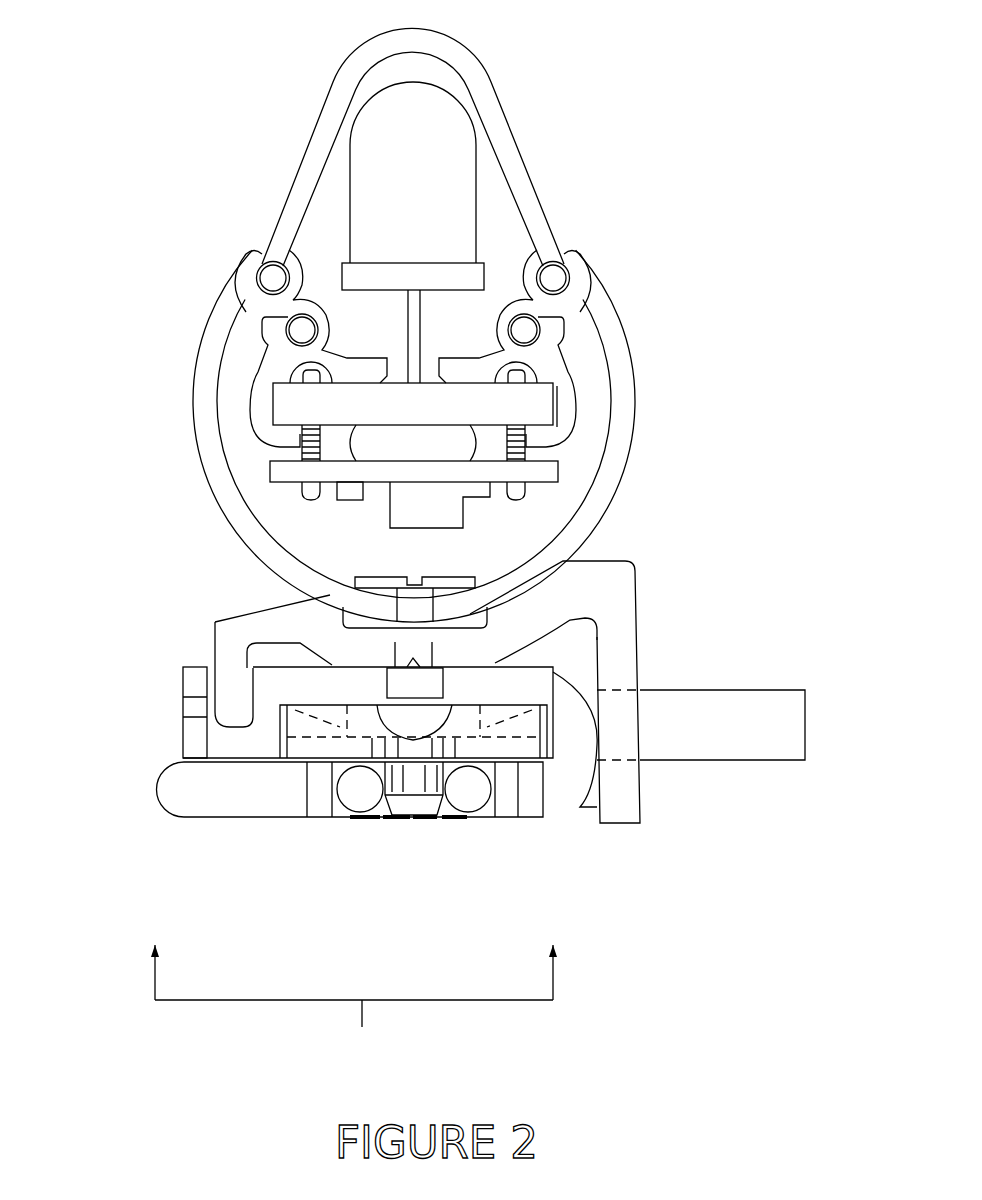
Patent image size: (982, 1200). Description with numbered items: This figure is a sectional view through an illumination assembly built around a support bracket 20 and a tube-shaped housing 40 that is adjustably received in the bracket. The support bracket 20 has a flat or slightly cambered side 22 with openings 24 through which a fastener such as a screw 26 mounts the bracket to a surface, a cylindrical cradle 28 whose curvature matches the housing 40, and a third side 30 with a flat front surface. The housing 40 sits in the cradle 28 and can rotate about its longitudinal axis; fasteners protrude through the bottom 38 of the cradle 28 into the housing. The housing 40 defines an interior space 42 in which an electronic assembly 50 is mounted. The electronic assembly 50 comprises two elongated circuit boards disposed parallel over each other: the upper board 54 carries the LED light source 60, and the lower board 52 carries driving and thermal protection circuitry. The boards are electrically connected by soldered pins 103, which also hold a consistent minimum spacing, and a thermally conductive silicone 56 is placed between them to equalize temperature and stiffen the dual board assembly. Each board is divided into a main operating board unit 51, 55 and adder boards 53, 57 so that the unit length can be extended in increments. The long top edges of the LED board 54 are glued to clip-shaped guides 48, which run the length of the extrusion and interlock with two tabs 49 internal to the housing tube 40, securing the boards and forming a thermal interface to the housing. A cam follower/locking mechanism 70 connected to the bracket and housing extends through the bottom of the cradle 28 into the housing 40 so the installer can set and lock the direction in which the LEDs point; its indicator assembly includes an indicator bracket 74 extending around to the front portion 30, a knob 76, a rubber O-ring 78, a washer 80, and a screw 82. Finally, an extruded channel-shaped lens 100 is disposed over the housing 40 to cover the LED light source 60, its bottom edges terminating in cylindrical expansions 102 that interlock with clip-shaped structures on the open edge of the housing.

The support bracket 20 is at (726, 693).
The flat or slightly cambered side 22 is at (633, 605).
The openings 24 is at (627, 770).
The screw 26 is at (740, 686).
The cylindrical cradle 28 is at (533, 575).
The third side 30 is at (207, 652).
The bottom of cradle 38 is at (343, 667).
The housing 40 is at (615, 337).
The interior space 42 is at (288, 520).
The guides 48 is at (258, 323).
The tabs 49 is at (520, 330).
The electronic assembly 50 is at (528, 391).
The main operating board unit 51 is at (497, 472).
The lower circuit board 52 is at (350, 470).
The adder board 53 is at (437, 470).
The upper circuit board 54 is at (290, 403).
The main operating board unit 55 is at (400, 393).
The silicone 56 is at (427, 447).
The adder board 57 is at (447, 397).
The LED light source 60 is at (467, 141).
The cam follower/locking mechanism 70 is at (354, 1007).
The indicator bracket 74 is at (188, 735).
The knob 76 is at (165, 797).
The rubber O-ring 78 is at (342, 802).
The washer 80 is at (380, 820).
The screw 82 is at (442, 821).
The lens 100 is at (470, 38).
The cylindrical expansion 102 is at (562, 263).
The soldered pins 103 is at (297, 493).